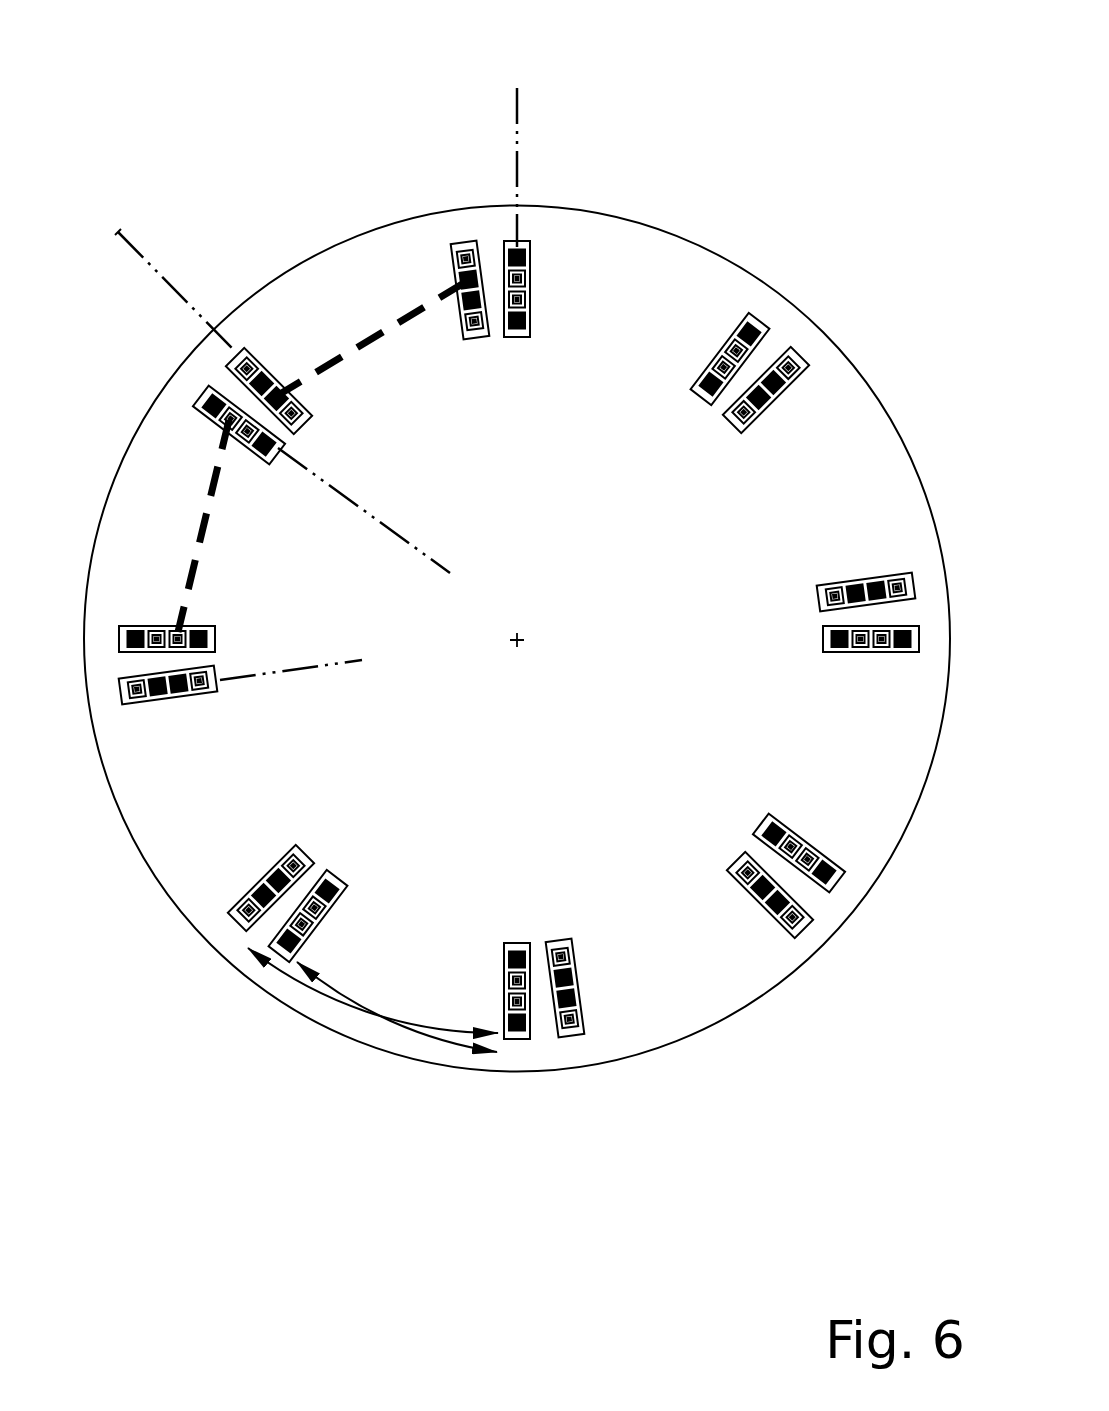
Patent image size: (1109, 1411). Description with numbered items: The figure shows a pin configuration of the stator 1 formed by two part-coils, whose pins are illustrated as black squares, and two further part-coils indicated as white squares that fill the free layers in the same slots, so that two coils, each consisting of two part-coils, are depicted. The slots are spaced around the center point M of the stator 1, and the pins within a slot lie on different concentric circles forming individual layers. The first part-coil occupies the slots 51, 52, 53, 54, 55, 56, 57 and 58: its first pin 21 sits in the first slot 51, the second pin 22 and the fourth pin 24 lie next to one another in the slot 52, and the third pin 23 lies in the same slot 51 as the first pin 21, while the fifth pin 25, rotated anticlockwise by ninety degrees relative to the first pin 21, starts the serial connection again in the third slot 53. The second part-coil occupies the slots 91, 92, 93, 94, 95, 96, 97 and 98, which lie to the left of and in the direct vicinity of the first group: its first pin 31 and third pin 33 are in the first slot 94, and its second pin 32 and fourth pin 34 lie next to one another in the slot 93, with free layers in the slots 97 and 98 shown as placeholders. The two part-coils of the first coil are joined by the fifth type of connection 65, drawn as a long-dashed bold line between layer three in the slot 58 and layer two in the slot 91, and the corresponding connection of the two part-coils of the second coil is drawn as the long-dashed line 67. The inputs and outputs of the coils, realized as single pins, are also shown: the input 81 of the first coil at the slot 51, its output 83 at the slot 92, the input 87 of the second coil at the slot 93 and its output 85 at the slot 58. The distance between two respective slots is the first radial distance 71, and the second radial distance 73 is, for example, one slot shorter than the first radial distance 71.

The stator 1 is at (608, 70).
The first pin 21 is at (527, 243).
The second pin 22 is at (792, 388).
The third pin 23 is at (527, 318).
The fourth pin 24 is at (768, 415).
The fifth pin 25 is at (912, 652).
The first pin 31 is at (297, 942).
The second pin 32 is at (153, 697).
The third pin 33 is at (333, 886).
The fourth pin 34 is at (198, 695).
The first slot 51 is at (594, 376).
The slot 52 is at (834, 370).
The third slot 53 is at (869, 728).
The slot 54 is at (728, 852).
The slot 55 is at (528, 1043).
The slot 56 is at (312, 853).
The slot 57 is at (222, 632).
The slot 58 is at (318, 420).
The fifth type of connection 65 is at (388, 325).
The long-dashed line 67 is at (200, 557).
The first radial distance 71 is at (311, 998).
The second radial distance 73 is at (423, 1027).
The input of the first coil 81 is at (516, 88).
The output of the first coil 83 is at (432, 557).
The output of the second coil 85 is at (120, 233).
The input of the second coil 87 is at (362, 660).
The slot 91 is at (492, 345).
The third slot 92 is at (197, 422).
The slot 93 is at (254, 757).
The first slot 94 is at (393, 890).
The slot 95 is at (578, 1043).
The slot 96 is at (752, 826).
The slot 97 is at (885, 570).
The slot 98 is at (712, 400).
The center point M is at (542, 660).